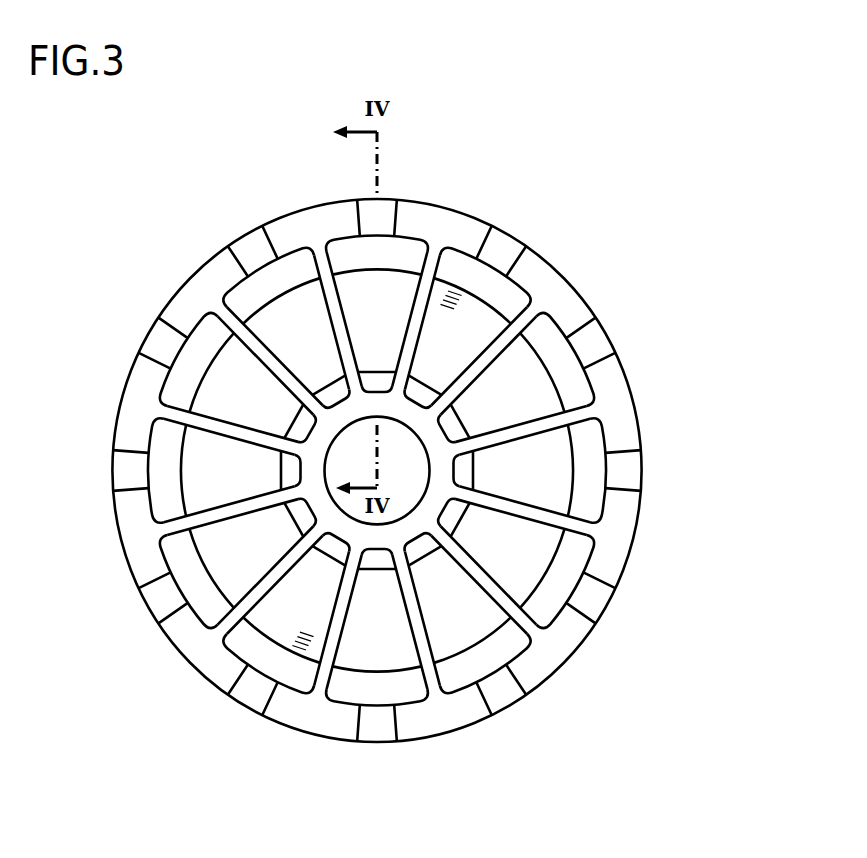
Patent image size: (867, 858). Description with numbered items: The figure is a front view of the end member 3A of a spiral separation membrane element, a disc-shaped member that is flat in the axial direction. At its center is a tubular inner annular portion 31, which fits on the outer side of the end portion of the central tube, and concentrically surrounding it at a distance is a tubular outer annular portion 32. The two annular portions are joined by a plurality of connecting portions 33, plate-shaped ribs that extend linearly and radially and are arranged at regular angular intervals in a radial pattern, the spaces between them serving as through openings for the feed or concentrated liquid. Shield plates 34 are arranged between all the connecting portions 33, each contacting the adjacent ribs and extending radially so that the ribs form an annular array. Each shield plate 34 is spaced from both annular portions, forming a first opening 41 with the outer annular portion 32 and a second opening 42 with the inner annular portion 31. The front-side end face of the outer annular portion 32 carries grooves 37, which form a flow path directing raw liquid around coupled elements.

The end member 3A is at (394, 429).
The inner annular portion 31 is at (320, 438).
The outer annular portion 32 is at (300, 230).
The connecting portions 33 is at (267, 357).
The shield plates 34 is at (542, 470).
The groove 37 is at (388, 199).
The first opening 41 is at (557, 357).
The second opening 42 is at (452, 519).